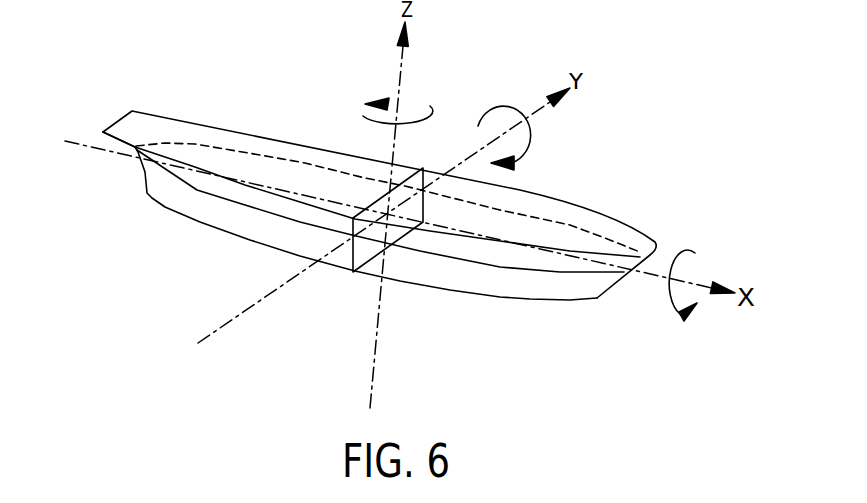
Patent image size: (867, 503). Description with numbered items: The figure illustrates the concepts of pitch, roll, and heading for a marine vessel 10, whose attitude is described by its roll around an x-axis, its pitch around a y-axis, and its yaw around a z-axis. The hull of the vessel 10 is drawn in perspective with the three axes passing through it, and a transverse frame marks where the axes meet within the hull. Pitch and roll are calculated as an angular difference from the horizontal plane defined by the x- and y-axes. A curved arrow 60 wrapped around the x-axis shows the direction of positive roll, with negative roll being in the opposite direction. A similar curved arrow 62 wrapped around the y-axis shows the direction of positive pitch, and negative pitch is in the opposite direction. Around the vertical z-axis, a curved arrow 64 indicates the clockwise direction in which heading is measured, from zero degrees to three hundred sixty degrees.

The watercraft hull 10 is at (227, 129).
The arrow 60 is at (680, 315).
The arrow 62 is at (531, 150).
The arrow 64 is at (363, 117).